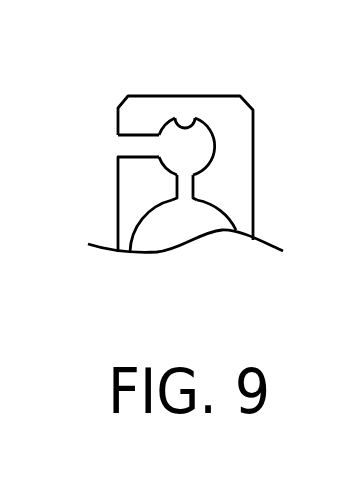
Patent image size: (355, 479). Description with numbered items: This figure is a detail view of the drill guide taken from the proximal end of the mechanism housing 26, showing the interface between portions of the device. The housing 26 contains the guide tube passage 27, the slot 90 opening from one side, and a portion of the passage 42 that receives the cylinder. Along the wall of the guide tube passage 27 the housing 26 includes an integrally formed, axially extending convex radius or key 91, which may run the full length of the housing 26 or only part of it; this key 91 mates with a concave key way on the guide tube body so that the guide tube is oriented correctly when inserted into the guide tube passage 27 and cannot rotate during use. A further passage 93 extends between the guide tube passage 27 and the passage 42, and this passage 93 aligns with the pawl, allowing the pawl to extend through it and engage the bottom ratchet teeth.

The mechanism housing 26 is at (233, 110).
The guide tube passage 27 is at (198, 142).
The passage 42 is at (188, 227).
The slot 90 is at (122, 147).
The key 91 is at (189, 120).
The passage 93 is at (187, 188).